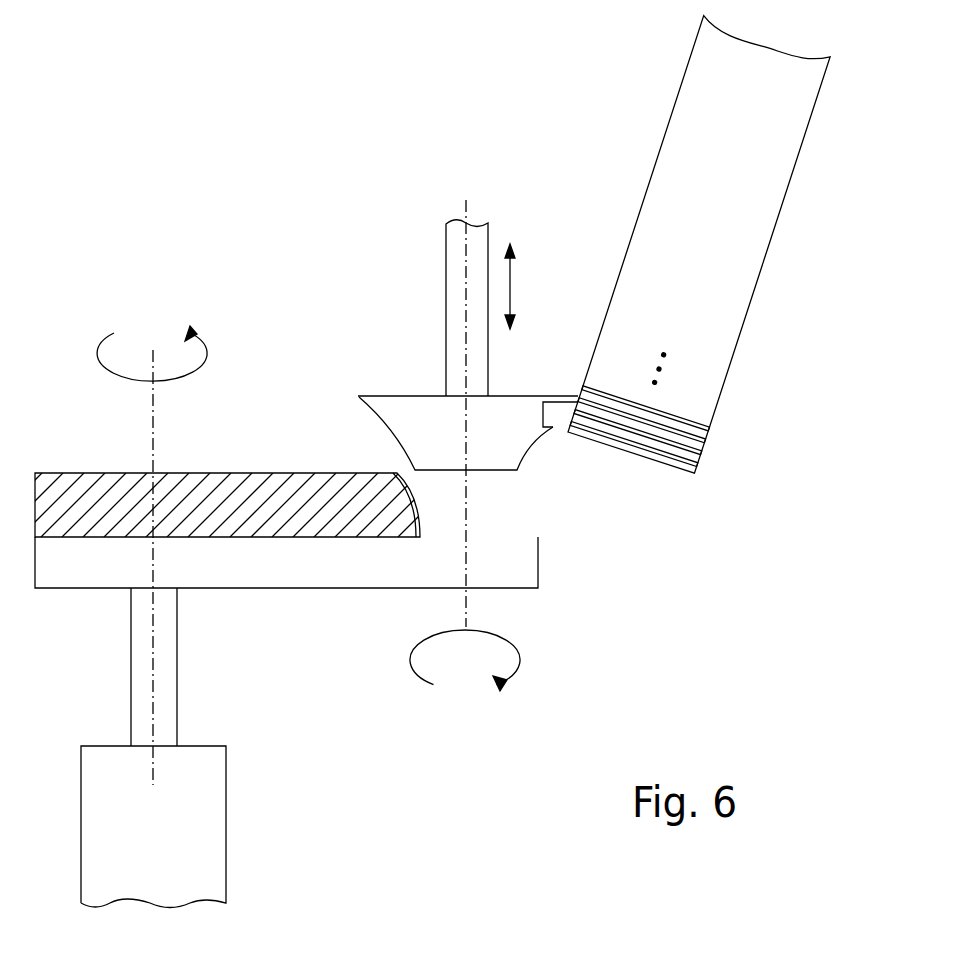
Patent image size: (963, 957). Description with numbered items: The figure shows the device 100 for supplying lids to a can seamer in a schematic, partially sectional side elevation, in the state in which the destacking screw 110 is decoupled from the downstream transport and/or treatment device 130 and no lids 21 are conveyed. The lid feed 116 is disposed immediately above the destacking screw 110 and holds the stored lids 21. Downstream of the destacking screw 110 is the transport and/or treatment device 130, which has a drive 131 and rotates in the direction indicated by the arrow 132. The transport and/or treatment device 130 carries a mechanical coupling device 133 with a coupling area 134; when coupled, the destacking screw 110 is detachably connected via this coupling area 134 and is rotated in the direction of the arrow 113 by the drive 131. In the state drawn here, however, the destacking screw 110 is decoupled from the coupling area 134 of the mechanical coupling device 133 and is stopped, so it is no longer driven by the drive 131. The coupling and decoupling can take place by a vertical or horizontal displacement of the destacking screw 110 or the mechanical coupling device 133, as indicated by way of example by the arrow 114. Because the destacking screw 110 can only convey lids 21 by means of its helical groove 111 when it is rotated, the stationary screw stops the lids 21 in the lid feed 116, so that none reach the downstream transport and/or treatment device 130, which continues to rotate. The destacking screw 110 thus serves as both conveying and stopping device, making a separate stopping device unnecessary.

The device 100 is at (228, 203).
The destacking screw 110 is at (387, 396).
The helical groove 111 is at (550, 417).
The arrow 113 is at (517, 662).
The arrow 114 is at (513, 290).
The lid feed 116 is at (735, 283).
The lids 21 is at (692, 416).
The transport and/or treatment device 130 is at (329, 572).
The drive 131 is at (213, 802).
The arrow 132 is at (197, 367).
The mechanical coupling device 133 is at (245, 490).
The coupling area 134 is at (398, 497).